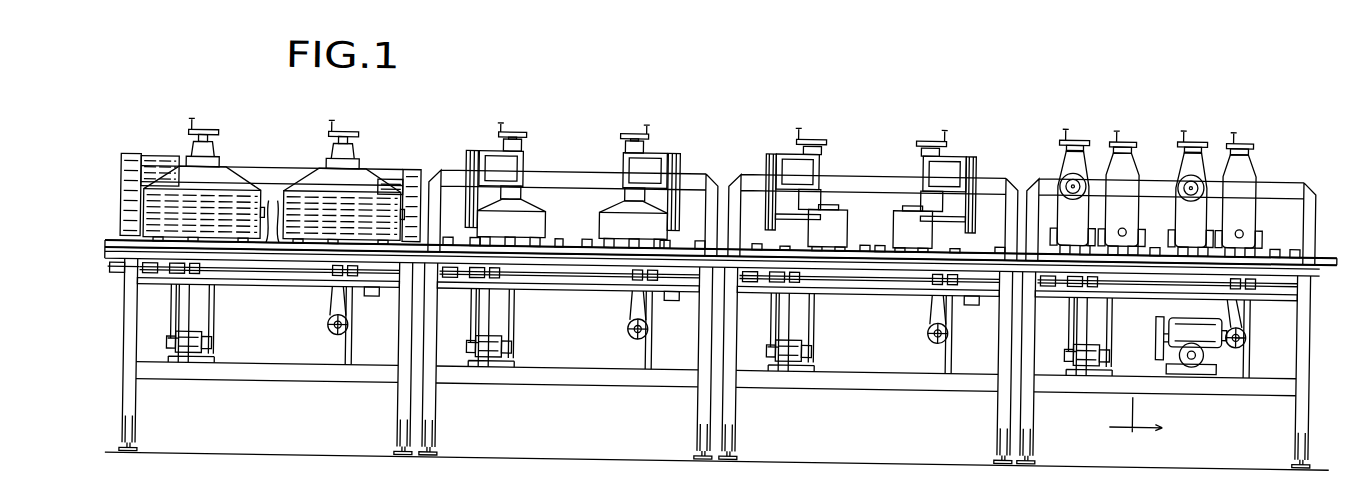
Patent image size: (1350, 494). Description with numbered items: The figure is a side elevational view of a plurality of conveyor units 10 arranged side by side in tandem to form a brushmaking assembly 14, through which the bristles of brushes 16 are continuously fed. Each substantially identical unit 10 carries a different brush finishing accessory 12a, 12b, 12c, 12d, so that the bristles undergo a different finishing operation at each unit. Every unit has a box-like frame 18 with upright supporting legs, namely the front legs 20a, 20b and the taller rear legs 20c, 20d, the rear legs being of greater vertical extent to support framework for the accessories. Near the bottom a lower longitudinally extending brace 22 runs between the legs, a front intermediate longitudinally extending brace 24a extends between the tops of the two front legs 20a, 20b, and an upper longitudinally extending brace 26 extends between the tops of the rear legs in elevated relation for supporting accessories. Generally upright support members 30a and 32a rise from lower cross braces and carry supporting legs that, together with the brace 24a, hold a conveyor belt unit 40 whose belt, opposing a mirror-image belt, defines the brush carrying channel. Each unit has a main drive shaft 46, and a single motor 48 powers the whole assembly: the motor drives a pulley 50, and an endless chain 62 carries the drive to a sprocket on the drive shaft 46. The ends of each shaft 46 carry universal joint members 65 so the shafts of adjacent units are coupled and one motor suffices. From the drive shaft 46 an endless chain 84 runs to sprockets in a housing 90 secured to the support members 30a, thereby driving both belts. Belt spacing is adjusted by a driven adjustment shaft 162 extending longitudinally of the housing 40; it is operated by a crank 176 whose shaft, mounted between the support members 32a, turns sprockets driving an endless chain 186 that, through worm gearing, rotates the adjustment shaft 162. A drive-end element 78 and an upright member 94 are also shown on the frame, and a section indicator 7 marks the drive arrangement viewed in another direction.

The section line 7 is at (1136, 423).
The conveyor unit 10 is at (273, 393).
The brush finishing accessory 12a is at (328, 128).
The brush finishing accessory 12b is at (630, 132).
The brush finishing accessory 12c is at (920, 131).
The brush finishing accessory 12d is at (1200, 116).
The brushmaking assembly 14 is at (705, 159).
The brushes 16 is at (270, 236).
The box-like frame 18 is at (297, 351).
The front leg 20a is at (138, 408).
The front leg 20b is at (400, 410).
The rear leg 20c is at (442, 188).
The rear leg 20d is at (715, 192).
The lower longitudinally extending brace 22 is at (716, 378).
The front intermediate longitudinally extending brace 24a is at (286, 284).
The upper longitudinally extending brace 26 is at (270, 165).
The front support member 30a is at (203, 357).
The front support member 32a is at (353, 345).
The conveyor belt unit 40 is at (1145, 253).
The main drive shaft 46 is at (292, 300).
The motor 48 is at (1192, 304).
The pulley 50 is at (1157, 338).
The endless chain 62 is at (1228, 294).
The universal joint members 65 is at (370, 293).
The gear reducer 78 is at (1195, 352).
The endless chain 84 is at (215, 307).
The housing 90 is at (170, 351).
The rod 94 is at (172, 312).
The driven adjustment shaft 162 is at (278, 263).
The crank 176 is at (334, 331).
The endless chain 186 is at (333, 290).